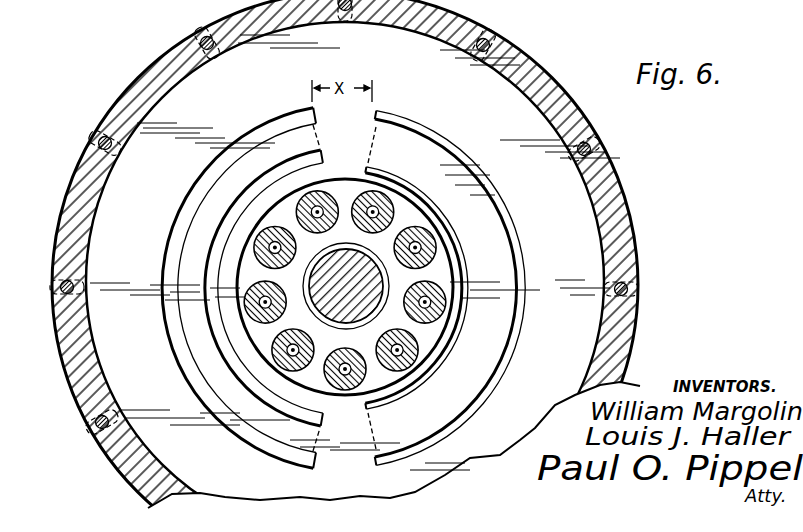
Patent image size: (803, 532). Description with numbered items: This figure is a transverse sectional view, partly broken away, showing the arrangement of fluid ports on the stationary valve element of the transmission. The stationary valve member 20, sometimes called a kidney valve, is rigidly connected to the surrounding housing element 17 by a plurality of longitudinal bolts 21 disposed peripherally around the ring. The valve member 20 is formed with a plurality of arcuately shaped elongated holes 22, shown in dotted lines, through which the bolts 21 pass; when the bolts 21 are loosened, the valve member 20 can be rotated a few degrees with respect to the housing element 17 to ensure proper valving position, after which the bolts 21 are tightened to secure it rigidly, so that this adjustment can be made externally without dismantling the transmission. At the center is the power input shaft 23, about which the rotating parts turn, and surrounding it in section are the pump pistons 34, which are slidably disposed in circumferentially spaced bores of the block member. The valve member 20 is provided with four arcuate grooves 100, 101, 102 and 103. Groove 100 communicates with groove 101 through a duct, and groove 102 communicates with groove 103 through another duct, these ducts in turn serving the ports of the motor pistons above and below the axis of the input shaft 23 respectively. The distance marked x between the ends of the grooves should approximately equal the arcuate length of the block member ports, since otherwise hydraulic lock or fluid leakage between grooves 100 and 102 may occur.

The housing element 17 is at (146, 78).
The stationary valve member 20 is at (584, 223).
The bolts 21 is at (487, 45).
The arcuately shaped elongated holes 22 is at (338, 14).
The power input shaft 23 is at (352, 268).
The pump piston 34 is at (368, 200).
The arcuate groove 100 is at (250, 140).
The arcuate groove 101 is at (220, 358).
The arcuate groove 102 is at (514, 354).
The arcuate groove 103 is at (462, 248).